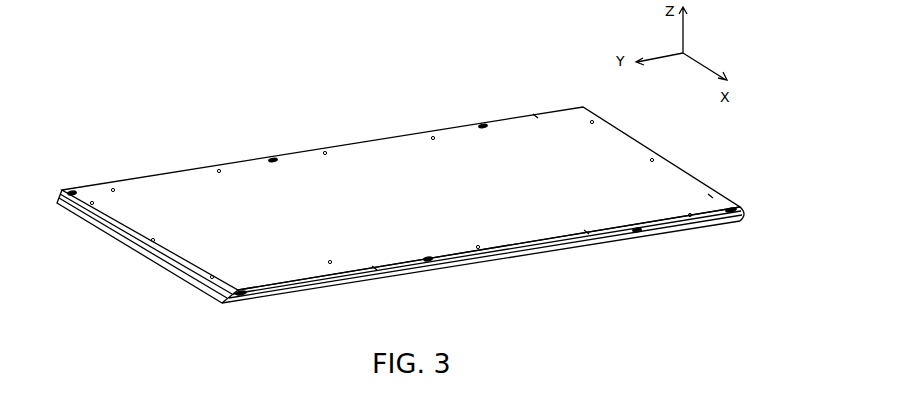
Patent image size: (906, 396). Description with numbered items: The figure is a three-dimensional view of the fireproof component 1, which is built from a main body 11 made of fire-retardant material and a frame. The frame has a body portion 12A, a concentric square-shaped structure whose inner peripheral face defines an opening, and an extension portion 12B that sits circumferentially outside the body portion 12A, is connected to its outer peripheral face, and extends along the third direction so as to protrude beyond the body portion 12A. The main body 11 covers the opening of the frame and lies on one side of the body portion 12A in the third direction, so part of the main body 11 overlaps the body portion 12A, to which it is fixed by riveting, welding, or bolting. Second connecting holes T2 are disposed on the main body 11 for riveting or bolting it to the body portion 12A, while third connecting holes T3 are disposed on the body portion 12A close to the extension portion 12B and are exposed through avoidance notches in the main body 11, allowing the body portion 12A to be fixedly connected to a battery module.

The fireproof component 1 is at (248, 118).
The main body 11 is at (378, 150).
The body portion 12A is at (637, 230).
The extension portion 12B is at (688, 237).
The second connecting hole T2 is at (536, 116).
The third connecting hole T3 is at (483, 125).